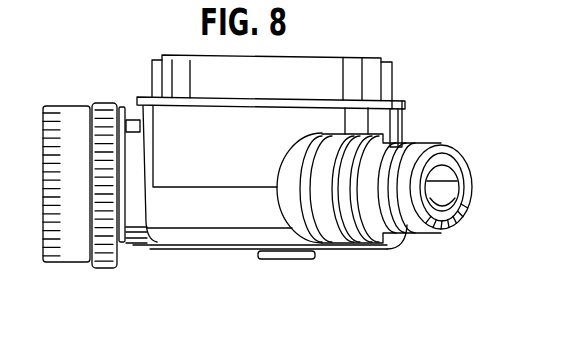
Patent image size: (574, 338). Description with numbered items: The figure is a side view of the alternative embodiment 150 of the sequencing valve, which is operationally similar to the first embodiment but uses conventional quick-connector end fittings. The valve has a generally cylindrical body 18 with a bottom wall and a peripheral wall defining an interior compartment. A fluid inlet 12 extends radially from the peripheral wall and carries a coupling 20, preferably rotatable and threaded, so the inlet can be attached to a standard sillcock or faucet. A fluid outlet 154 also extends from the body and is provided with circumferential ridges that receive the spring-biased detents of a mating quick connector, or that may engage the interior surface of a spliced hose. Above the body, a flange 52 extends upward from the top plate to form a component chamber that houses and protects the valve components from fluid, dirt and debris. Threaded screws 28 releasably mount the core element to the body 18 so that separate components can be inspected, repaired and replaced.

The alternative embodiment 150 is at (178, 41).
The flange 52 is at (374, 79).
The body 18 is at (405, 122).
The fluid outlet 154 is at (413, 145).
The coupling 20 is at (100, 268).
The fluid inlet 12 is at (132, 250).
The threaded screws 28 is at (300, 258).